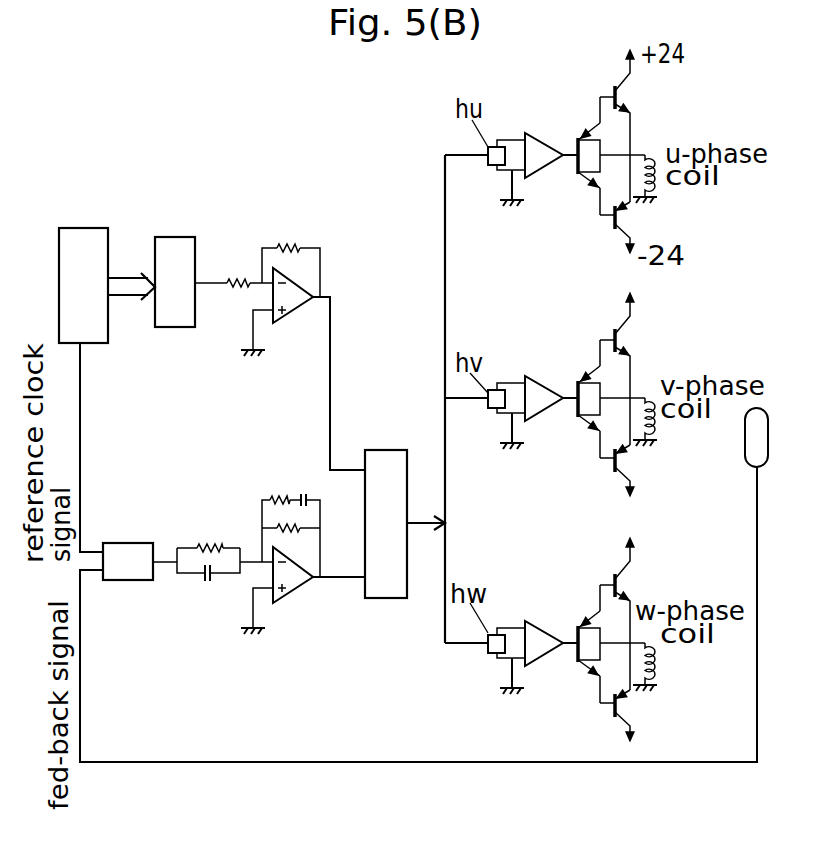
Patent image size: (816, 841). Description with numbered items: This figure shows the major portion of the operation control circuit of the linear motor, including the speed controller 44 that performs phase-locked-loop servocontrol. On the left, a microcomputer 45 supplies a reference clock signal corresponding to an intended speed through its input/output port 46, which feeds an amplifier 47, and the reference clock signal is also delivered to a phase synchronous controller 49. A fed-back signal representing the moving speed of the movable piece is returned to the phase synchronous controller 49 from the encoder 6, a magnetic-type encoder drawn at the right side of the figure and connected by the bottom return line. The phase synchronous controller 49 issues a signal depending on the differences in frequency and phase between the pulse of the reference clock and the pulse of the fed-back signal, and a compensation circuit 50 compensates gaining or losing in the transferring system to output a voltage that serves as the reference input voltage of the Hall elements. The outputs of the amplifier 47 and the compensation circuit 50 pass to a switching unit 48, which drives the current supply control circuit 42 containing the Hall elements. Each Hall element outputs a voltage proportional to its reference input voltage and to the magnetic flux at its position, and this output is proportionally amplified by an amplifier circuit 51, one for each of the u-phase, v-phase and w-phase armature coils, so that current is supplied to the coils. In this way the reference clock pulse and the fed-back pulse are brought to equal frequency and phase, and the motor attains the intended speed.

The microcomputer 45 is at (85, 228).
The input/output port 46 is at (177, 237).
The amplifier 47 is at (295, 222).
The switching unit 48 is at (383, 450).
The phase synchronous controller 49 is at (132, 543).
The compensation circuit 50 is at (245, 494).
The amplifier circuit 51 is at (556, 192).
The speed controller 44 is at (222, 660).
The current supply control circuit 42 is at (446, 669).
The encoder 6 is at (752, 430).